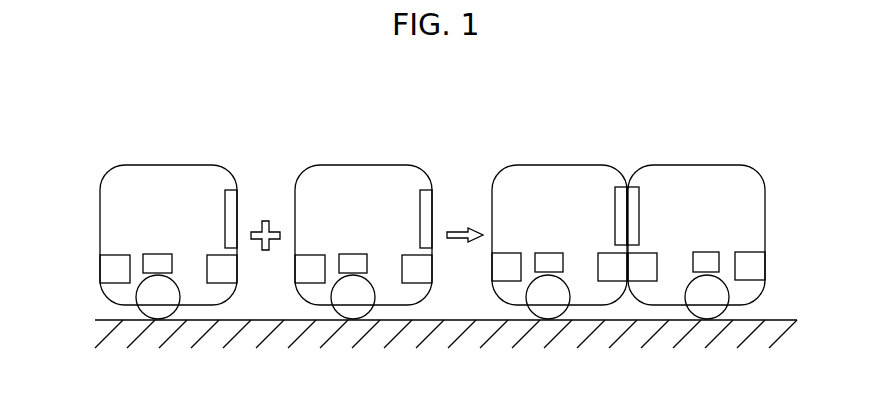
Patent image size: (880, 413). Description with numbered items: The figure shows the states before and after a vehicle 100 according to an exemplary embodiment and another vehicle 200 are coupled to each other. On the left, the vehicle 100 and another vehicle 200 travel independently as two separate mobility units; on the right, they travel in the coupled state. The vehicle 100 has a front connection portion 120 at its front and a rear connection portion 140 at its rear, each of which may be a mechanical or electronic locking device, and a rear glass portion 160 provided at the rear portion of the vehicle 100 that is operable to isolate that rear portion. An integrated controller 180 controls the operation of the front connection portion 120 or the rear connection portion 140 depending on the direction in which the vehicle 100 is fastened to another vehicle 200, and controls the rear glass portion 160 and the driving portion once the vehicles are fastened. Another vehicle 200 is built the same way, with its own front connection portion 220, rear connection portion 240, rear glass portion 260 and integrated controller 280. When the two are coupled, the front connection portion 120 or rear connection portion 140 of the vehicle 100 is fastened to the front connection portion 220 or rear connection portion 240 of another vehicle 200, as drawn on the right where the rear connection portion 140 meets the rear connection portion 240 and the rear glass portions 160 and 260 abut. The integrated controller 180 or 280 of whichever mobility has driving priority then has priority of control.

The vehicle 100 is at (169, 148).
The another vehicle 200 is at (361, 148).
The front connection portion 120 is at (117, 270).
The rear connection portion 140 is at (222, 270).
The rear glass portion 160 is at (231, 201).
The integrated controller 180 is at (158, 263).
The front connection portion 220 is at (307, 270).
The rear connection portion 240 is at (418, 270).
The rear glass portion 260 is at (425, 201).
The integrated controller 280 is at (356, 263).